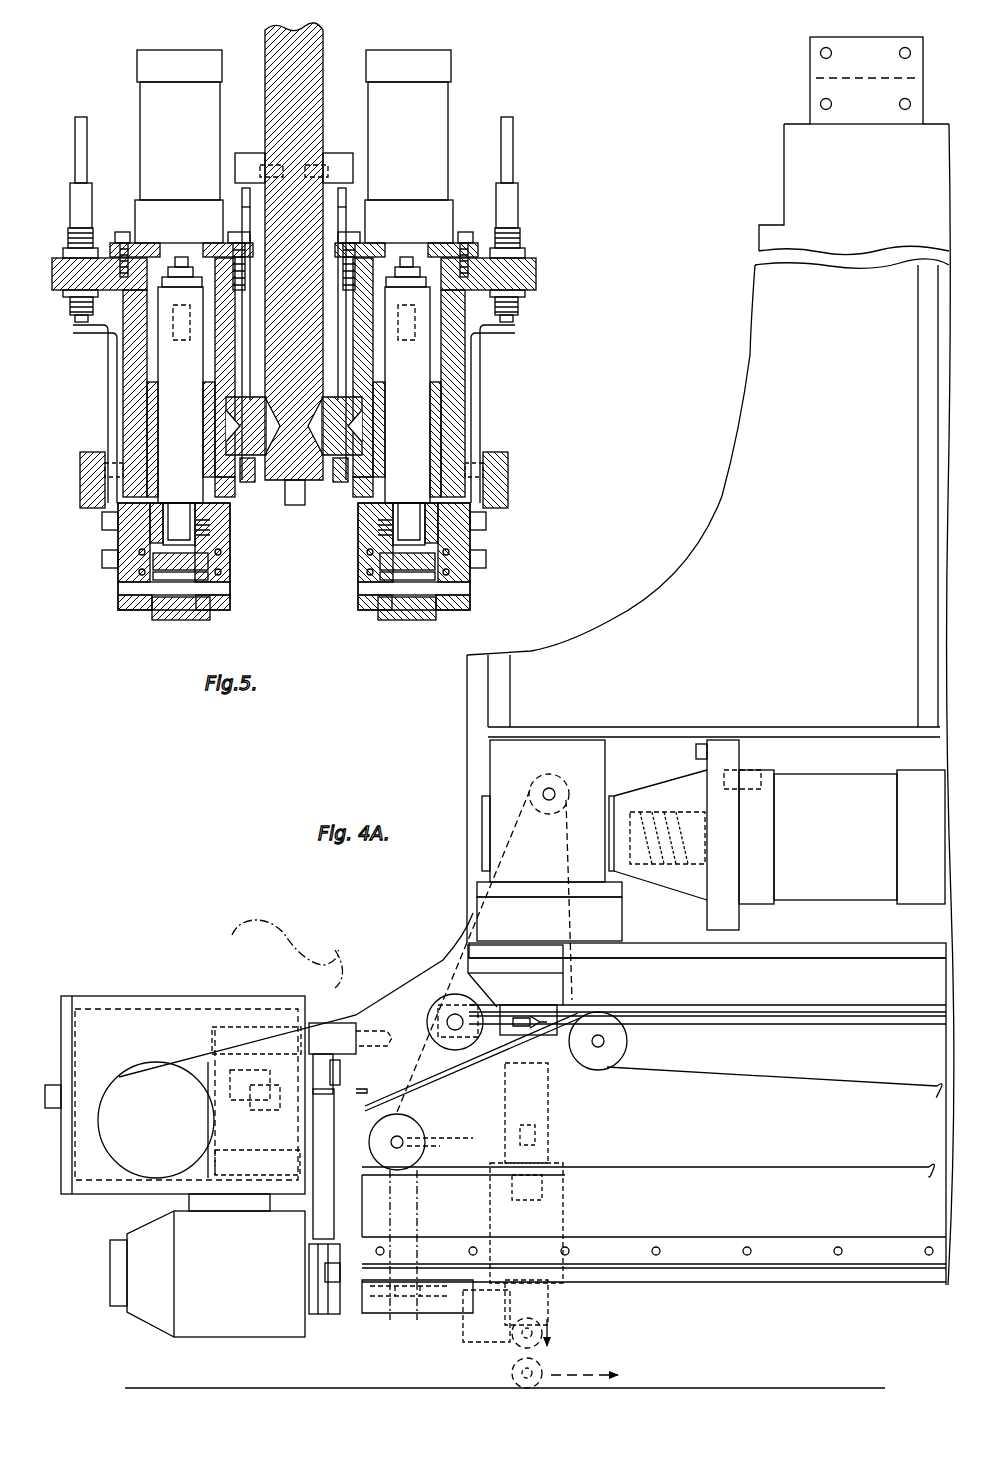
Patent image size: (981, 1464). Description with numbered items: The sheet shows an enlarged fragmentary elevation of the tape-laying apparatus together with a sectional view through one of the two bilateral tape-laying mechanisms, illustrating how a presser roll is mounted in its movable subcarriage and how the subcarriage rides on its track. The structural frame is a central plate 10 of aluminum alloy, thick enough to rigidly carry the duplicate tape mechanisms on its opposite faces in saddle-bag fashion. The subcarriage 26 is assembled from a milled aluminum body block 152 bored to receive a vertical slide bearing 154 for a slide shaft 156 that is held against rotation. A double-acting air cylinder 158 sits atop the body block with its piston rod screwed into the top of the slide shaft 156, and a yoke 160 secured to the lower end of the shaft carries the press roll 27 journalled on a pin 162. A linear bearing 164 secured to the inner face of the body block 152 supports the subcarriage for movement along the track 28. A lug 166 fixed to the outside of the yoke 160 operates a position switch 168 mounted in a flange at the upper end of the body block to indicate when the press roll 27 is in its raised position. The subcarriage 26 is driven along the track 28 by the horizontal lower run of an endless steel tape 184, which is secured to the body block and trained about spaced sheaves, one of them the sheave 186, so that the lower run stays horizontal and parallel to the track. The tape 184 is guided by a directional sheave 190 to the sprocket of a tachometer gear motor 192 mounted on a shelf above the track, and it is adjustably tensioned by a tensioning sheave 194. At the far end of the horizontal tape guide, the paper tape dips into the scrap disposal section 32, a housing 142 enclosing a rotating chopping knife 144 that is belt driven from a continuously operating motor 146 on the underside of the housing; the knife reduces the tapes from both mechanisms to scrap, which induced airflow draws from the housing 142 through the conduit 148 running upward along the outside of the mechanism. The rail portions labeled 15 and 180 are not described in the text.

In FIG. 5, the central plate 10 is at (323, 45).
In FIG. 5, the double-acting air cylinder 158 is at (201, 129).
In FIG. 5, the position switch 168 is at (73, 199).
In FIG. 5, the lug 166 is at (72, 329).
In FIG. 5, the body block 152 is at (130, 358).
In FIG. 5, the vertical slide bearing 154 is at (148, 400).
In FIG. 5, the slide shaft 156 is at (192, 385).
In FIG. 5, the track 28 is at (260, 437).
In FIG. 5, the yoke 160 is at (133, 532).
In FIG. 5, the linear bearing 164 is at (243, 482).
In FIG. 5, the pin 162 is at (130, 585).
In FIG. 5, the press roll 27 is at (170, 622).
In FIG. 4A, the press roll 27 is at (518, 1348).
In FIG. 5, the subcarriage 26 is at (97, 427).
In FIG. 4A, the subcarriage 26 is at (560, 1296).
In FIG. 4A, the tachometer gear motor 192 is at (850, 847).
In FIG. 4A, the rail 15 is at (740, 967).
In FIG. 4A, the guide rail 180 is at (863, 1016).
In FIG. 4A, the tensioning sheave 194 is at (472, 1003).
In FIG. 4A, the directional sheave 190 is at (608, 1065).
In FIG. 4A, the endless steel tape 184 is at (763, 1167).
In FIG. 4A, the sheave 186 is at (410, 1127).
In FIG. 4A, the housing 142 is at (108, 1008).
In FIG. 4A, the rotating chopping knife 144 is at (198, 1122).
In FIG. 4A, the conduit 148 is at (235, 935).
In FIG. 4A, the scrap disposal section 32 is at (110, 1212).
In FIG. 4A, the motor 146 is at (256, 1283).